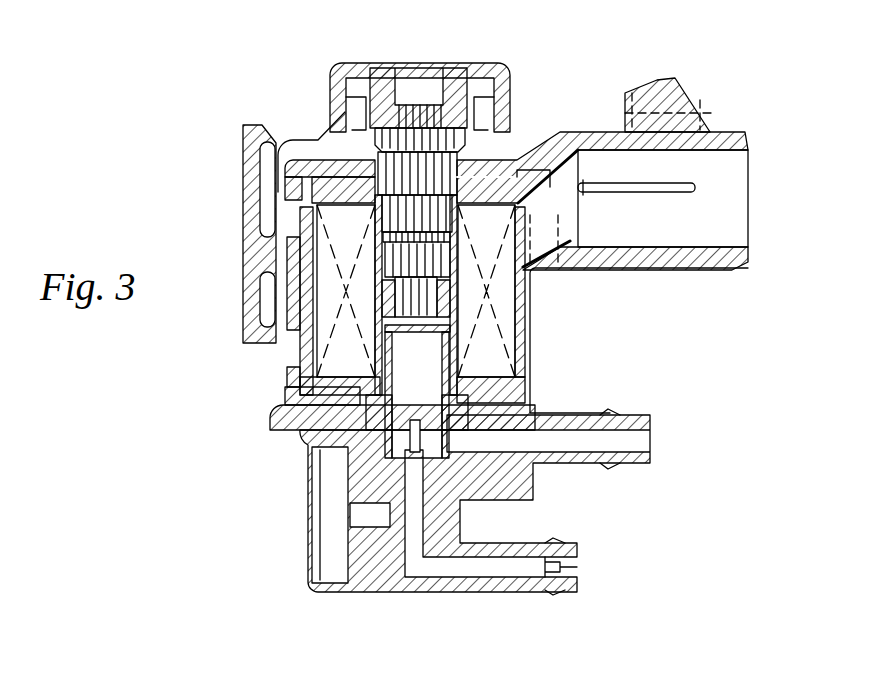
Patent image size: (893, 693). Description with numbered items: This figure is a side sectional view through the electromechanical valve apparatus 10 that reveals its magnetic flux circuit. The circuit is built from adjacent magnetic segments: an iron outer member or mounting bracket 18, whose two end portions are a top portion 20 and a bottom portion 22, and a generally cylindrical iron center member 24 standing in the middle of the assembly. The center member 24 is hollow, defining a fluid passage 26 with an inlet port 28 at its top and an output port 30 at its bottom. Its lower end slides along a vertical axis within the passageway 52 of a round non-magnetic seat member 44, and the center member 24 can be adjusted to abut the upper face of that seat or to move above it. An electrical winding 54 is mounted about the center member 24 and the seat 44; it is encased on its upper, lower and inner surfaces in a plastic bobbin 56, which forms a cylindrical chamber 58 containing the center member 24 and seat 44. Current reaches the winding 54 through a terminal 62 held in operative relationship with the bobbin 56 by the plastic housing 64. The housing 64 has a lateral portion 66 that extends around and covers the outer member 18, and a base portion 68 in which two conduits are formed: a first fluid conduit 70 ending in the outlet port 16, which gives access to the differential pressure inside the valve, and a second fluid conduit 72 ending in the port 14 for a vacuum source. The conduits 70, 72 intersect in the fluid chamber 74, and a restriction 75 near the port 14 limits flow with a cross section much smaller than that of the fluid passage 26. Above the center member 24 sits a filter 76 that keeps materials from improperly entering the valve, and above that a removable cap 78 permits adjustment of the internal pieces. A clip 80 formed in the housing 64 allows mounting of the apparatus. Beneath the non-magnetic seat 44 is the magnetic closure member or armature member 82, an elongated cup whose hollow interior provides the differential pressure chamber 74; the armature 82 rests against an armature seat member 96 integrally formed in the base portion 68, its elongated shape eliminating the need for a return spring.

The electromechanical valve apparatus 10 is at (222, 163).
The port 14 is at (585, 566).
The outlet port 16 is at (657, 440).
The mounting bracket 18 is at (250, 352).
The top portion 20 is at (307, 137).
The bottom portion 22 is at (275, 445).
The center member 24 is at (519, 150).
The fluid passage 26 is at (312, 163).
The inlet port 28 is at (410, 92).
The output port 30 is at (430, 336).
The non-magnetic seat member 44 is at (440, 301).
The passageway 52 is at (250, 301).
The electrical winding 54 is at (507, 281).
The bobbin 56 is at (250, 213).
The cylindrical chamber 58 is at (515, 352).
The terminal 62 is at (688, 193).
The housing 64 is at (735, 146).
The lateral portion 66 is at (300, 413).
The base portion 68 is at (345, 600).
The first fluid conduit 70 is at (567, 443).
The second fluid conduit 72 is at (513, 542).
The fluid chamber 74 is at (355, 469).
The restriction 75 is at (553, 572).
The filter 76 is at (445, 76).
The cap 78 is at (505, 66).
The clip 80 is at (243, 188).
The armature member 82 is at (526, 364).
The armature seat member 96 is at (350, 489).